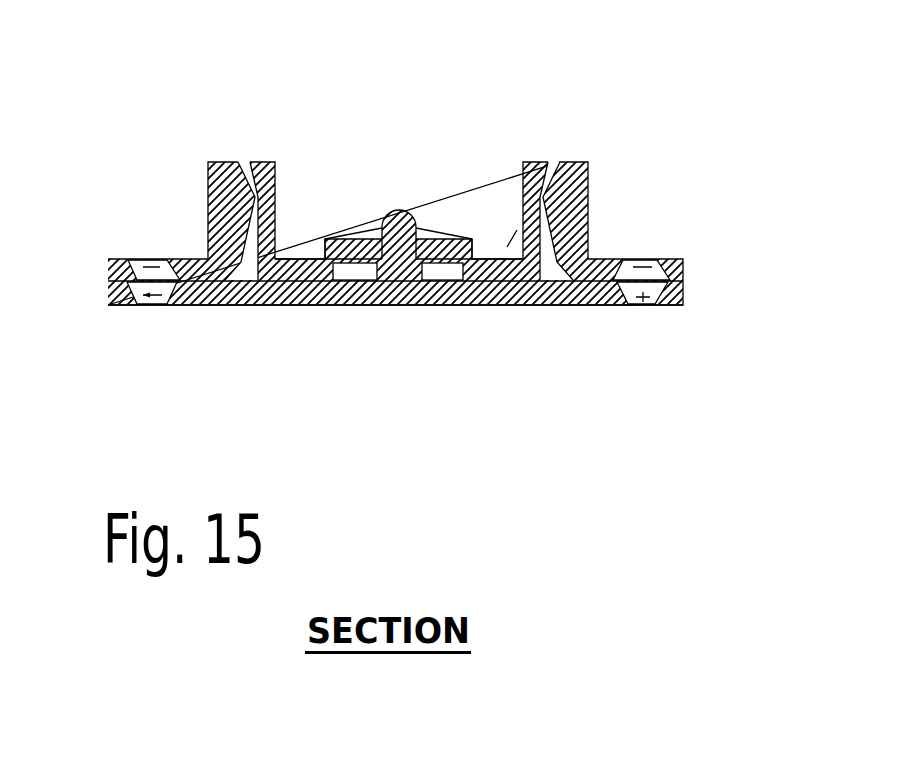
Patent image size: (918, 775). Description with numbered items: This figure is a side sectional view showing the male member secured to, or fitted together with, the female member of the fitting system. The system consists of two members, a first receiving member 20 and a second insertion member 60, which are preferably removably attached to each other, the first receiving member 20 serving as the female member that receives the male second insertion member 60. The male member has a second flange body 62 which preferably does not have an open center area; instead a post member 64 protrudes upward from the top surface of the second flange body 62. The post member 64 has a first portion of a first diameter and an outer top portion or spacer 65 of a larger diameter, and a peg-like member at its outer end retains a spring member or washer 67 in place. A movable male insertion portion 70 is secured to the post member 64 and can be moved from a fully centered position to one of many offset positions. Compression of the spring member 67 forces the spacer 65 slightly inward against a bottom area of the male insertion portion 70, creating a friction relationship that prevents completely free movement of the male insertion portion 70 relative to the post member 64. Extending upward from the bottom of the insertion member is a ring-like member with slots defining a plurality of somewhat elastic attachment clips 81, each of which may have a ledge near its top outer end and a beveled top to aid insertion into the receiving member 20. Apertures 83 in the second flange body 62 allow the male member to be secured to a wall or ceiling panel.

The first receiving member 20 is at (207, 203).
The second insertion member 60 is at (688, 308).
The second flange body 62 is at (323, 308).
The post member 64 is at (394, 207).
The second post portion or spacer 65 is at (480, 247).
The spring member or washer 67 is at (438, 231).
The male insertion portion 70 is at (253, 160).
The attachment clips 81 is at (280, 200).
The apertures 83 is at (143, 308).